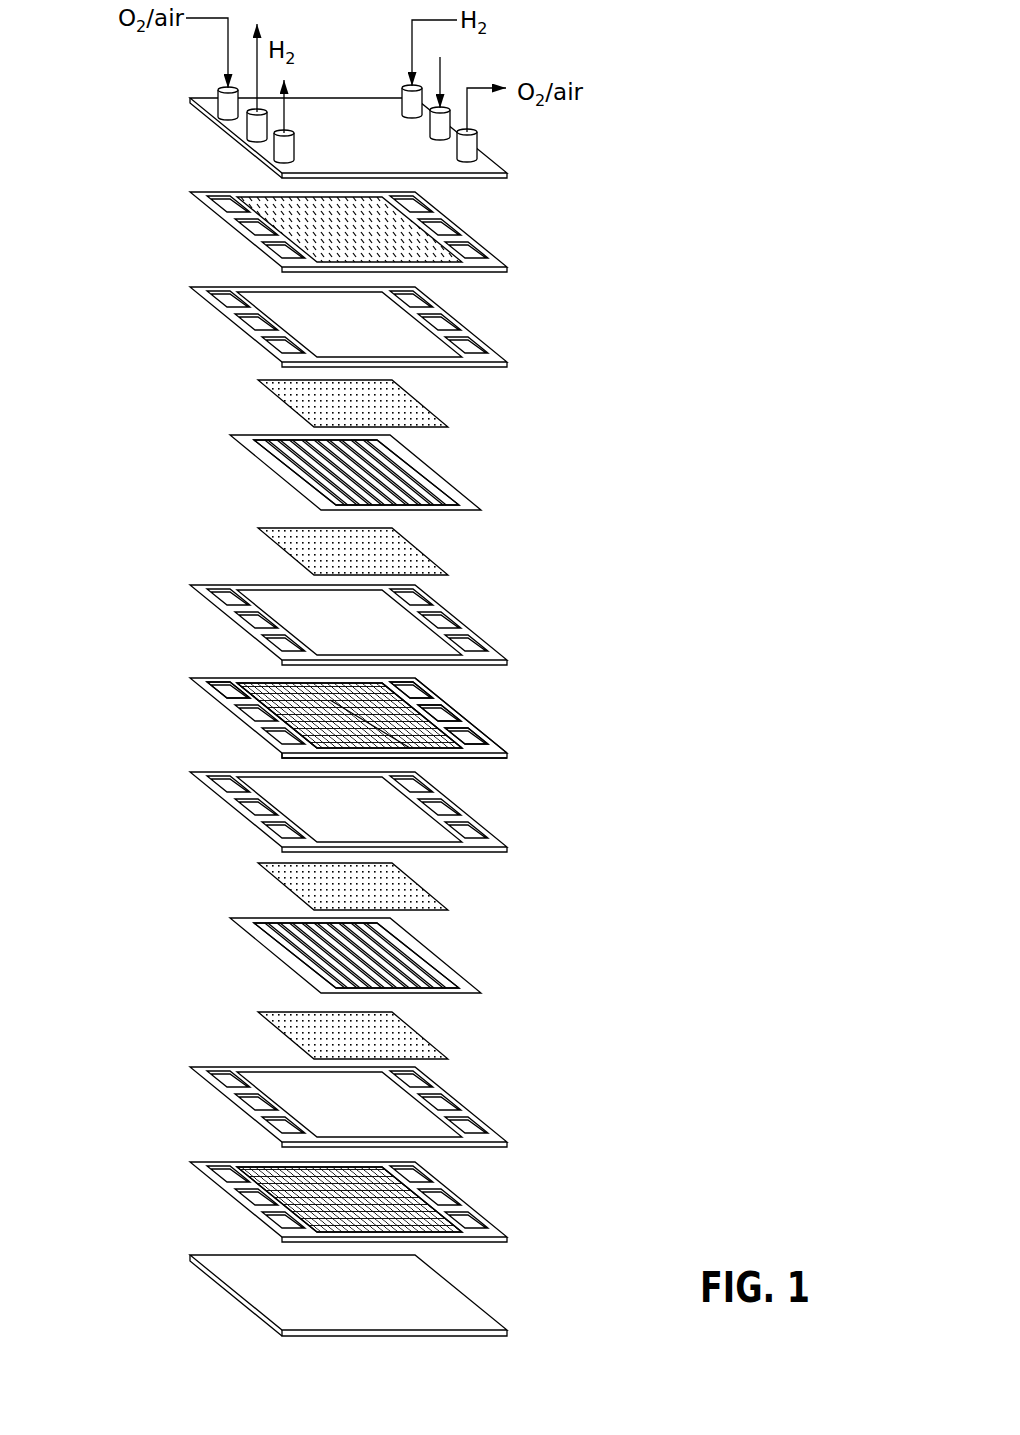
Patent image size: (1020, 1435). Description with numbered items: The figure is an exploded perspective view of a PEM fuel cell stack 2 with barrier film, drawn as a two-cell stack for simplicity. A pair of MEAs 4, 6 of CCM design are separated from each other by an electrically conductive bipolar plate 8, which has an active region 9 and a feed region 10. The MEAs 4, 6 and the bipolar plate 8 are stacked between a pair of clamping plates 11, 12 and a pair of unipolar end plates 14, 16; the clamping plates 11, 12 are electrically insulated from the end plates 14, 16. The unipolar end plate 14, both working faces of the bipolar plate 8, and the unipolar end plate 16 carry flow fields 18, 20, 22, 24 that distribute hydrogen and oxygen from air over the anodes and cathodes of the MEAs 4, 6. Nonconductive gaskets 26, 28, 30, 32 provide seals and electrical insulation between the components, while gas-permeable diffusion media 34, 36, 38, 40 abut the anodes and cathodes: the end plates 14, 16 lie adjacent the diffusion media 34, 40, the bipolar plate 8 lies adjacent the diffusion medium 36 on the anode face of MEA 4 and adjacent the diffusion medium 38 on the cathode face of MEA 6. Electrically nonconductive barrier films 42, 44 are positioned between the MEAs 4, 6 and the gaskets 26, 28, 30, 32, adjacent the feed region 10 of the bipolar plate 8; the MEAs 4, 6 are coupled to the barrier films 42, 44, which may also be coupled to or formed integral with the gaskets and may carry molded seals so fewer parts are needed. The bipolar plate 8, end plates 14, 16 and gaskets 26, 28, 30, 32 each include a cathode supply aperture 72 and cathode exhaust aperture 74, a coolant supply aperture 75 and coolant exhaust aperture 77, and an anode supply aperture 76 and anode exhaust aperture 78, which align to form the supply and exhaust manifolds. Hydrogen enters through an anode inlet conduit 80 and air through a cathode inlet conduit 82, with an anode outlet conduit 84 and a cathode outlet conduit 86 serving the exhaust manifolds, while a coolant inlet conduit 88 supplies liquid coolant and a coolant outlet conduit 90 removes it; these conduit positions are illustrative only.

The fuel cell stack 2 is at (627, 426).
The MEA 4 is at (273, 465).
The MEA 6 is at (433, 958).
The bipolar plate 8 is at (203, 700).
The active region 9 is at (362, 720).
The feed region 10 is at (462, 753).
The clamping plate 11 is at (223, 135).
The clamping plate 12 is at (482, 1298).
The unipolar end plate 14 is at (222, 232).
The unipolar end plate 16 is at (452, 1177).
The flow field 18 is at (262, 228).
The flow field 20 is at (428, 690).
The flow field 22 is at (310, 730).
The flow field 24 is at (425, 1223).
The nonconductive gasket 26 is at (237, 297).
The nonconductive gasket 28 is at (235, 622).
The nonconductive gasket 30 is at (440, 823).
The nonconductive gasket 32 is at (430, 1112).
The diffusion medium 34 is at (290, 402).
The diffusion medium 36 is at (290, 557).
The diffusion medium 38 is at (410, 883).
The diffusion medium 40 is at (413, 1033).
The barrier film 42 is at (242, 448).
The barrier film 44 is at (270, 950).
The cathode supply aperture 72 is at (222, 682).
The cathode exhaust aperture 74 is at (443, 735).
The coolant supply aperture 75 is at (440, 722).
The anode supply aperture 76 is at (398, 716).
The coolant exhaust aperture 77 is at (300, 718).
The anode exhaust aperture 78 is at (303, 733).
The anode inlet conduit 80 is at (400, 103).
The cathode inlet conduit 82 is at (217, 98).
The anode outlet conduit 84 is at (273, 140).
The cathode outlet conduit 86 is at (478, 152).
The coolant inlet conduit 88 is at (456, 115).
The coolant outlet conduit 90 is at (247, 128).